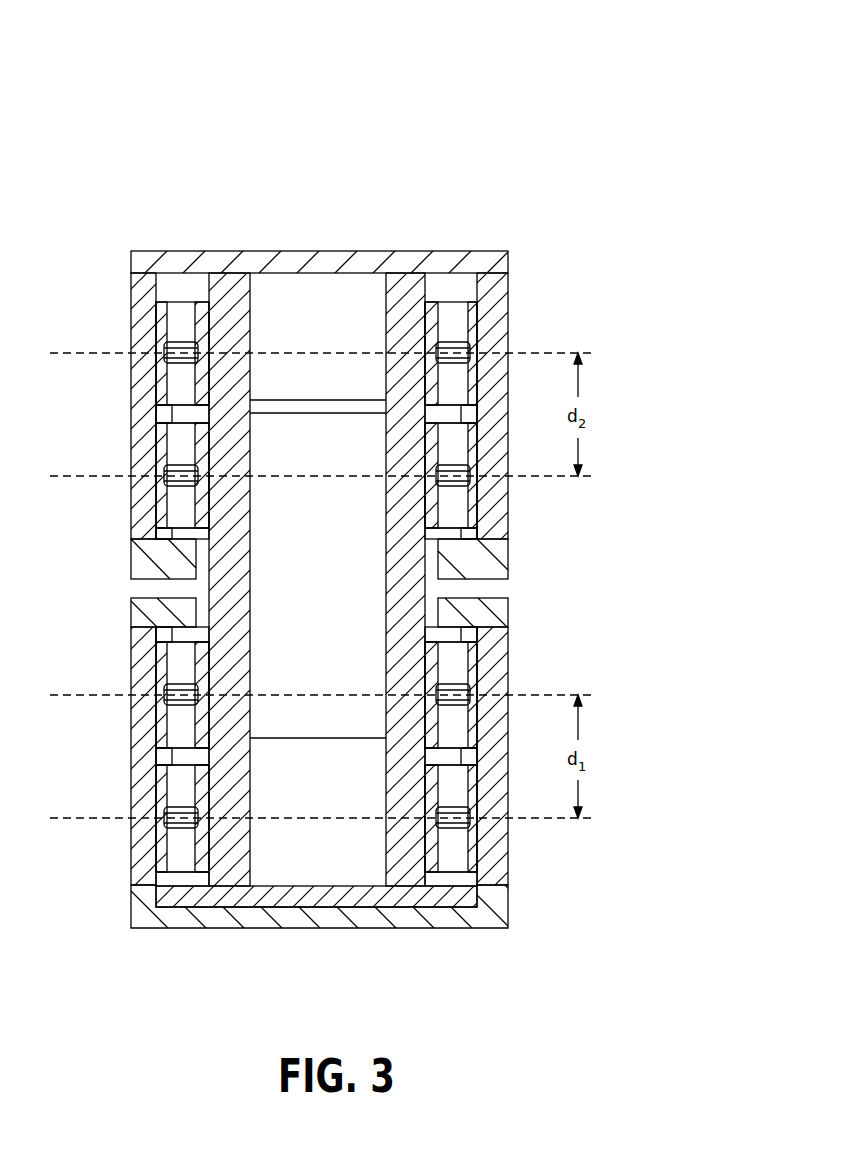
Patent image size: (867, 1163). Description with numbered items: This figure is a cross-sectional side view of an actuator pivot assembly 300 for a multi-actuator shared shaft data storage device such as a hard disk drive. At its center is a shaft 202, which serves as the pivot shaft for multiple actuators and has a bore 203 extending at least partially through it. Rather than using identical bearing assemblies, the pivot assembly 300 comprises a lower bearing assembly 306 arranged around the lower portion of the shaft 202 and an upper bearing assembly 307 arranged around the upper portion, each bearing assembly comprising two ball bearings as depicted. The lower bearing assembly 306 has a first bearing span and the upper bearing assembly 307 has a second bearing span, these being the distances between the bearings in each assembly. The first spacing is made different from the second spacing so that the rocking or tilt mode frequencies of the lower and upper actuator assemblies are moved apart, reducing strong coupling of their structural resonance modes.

The pivot assembly 300 is at (460, 60).
The shaft 202 is at (231, 298).
The bore 203 is at (317, 325).
The upper bearing assembly 307 is at (447, 323).
The lower bearing assembly 306 is at (453, 857).